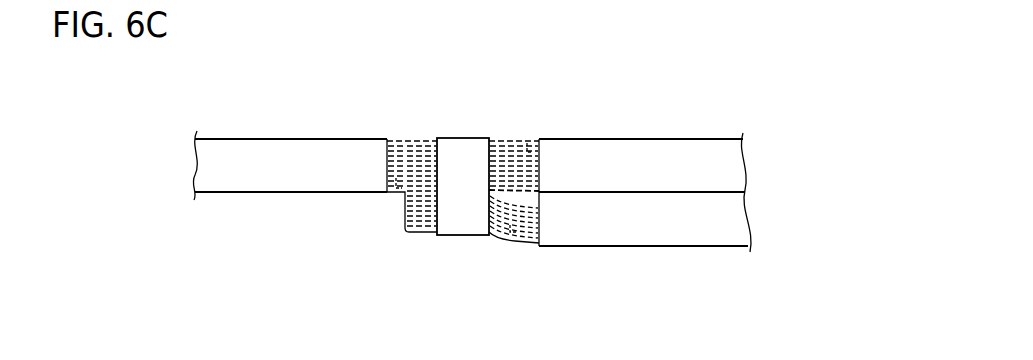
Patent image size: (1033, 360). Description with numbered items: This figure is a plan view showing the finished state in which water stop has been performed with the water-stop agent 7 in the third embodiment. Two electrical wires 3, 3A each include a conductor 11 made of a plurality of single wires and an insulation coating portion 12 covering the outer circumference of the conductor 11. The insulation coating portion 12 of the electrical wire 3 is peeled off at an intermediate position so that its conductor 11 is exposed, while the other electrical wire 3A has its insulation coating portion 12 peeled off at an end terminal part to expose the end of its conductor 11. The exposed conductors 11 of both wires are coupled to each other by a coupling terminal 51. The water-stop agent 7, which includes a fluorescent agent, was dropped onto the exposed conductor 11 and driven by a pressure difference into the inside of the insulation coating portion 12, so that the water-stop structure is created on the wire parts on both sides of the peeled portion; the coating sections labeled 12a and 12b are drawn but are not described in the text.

The electrical wire 3 is at (249, 137).
The electrical wire 3A is at (634, 248).
The water-stop agent 7 is at (409, 139).
The conductor 11 is at (527, 140).
The insulation coating portion 12 is at (708, 223).
The first conductor 12a is at (328, 138).
The second conductor 12b is at (688, 150).
The coupling terminal 51 is at (468, 143).